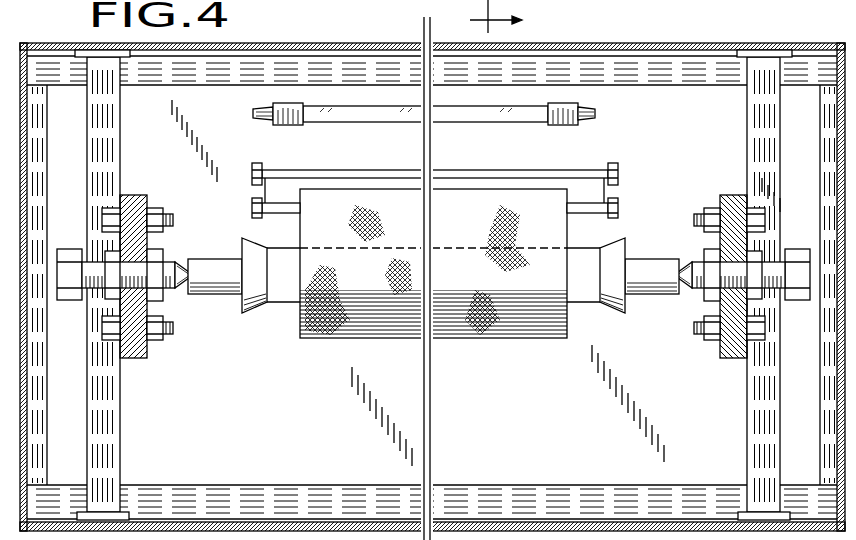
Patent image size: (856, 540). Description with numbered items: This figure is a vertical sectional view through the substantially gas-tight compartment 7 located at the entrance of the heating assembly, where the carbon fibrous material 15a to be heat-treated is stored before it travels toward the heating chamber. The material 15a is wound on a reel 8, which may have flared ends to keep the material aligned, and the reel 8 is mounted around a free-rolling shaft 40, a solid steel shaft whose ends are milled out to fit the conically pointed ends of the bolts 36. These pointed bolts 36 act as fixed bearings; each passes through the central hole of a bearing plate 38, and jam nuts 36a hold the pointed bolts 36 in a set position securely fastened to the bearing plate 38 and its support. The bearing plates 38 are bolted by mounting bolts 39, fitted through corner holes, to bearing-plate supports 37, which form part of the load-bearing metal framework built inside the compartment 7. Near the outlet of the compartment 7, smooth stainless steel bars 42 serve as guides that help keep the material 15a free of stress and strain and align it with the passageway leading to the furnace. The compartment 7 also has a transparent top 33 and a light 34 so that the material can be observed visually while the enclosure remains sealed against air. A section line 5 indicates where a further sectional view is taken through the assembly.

The section line 5- 5 is at (471, 270).
The compartment 7 is at (647, 106).
The reel 8 is at (288, 248).
The fibrous material 15a is at (372, 166).
The transparent top 33 is at (380, 20).
The light 34 is at (490, 108).
The pointed bolt 36 is at (172, 263).
The jam nut 36a is at (110, 250).
The bearing-plate support 37 is at (123, 149).
The bearing plate 38 is at (141, 195).
The mounting bolt 39 is at (168, 222).
The free-rolling shaft 40 is at (225, 288).
The guide bar 42 is at (480, 168).